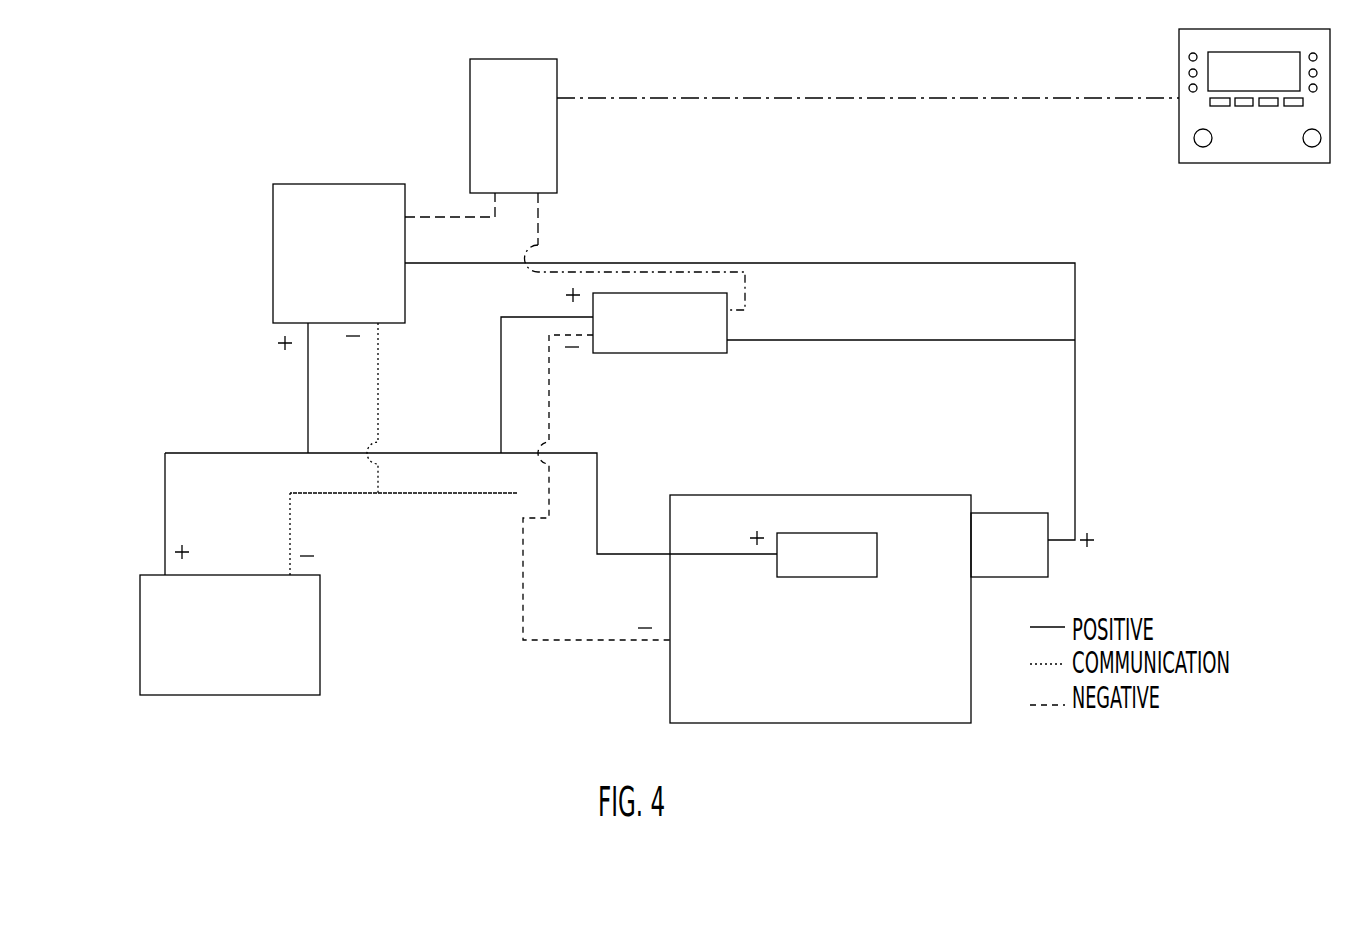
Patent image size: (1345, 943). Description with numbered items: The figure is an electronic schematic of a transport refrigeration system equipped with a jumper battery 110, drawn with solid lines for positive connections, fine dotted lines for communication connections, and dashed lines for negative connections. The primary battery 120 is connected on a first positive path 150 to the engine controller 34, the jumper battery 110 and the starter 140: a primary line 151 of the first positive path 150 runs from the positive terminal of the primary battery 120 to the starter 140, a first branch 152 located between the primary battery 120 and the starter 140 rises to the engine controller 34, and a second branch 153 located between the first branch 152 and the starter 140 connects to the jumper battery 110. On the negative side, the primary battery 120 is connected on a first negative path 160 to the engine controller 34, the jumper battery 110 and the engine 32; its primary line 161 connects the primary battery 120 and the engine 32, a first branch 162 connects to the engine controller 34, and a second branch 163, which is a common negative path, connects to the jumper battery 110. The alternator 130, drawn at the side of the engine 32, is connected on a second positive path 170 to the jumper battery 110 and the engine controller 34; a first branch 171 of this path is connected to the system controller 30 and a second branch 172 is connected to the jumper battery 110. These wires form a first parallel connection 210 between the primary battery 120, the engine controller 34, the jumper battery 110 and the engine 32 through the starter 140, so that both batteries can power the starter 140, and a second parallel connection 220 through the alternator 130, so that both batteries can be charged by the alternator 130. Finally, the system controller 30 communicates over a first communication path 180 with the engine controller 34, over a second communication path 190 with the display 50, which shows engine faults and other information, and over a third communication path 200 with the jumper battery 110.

The system controller 30 is at (526, 134).
The engine 32 is at (835, 654).
The engine controller 34 is at (350, 272).
The display 50 is at (1267, 88).
The jumper battery 110 is at (678, 339).
The primary battery 120 is at (246, 644).
The alternator 130 is at (1018, 558).
The starter 140 is at (840, 572).
The first positive path 150 is at (158, 545).
The primary line of the first positive path 151 is at (165, 453).
The first branch of the first positive path 152 is at (308, 397).
The second branch of the first positive path 153 is at (500, 383).
The first negative path 160 is at (290, 527).
The primary line of the first negative path 161 is at (347, 497).
The first branch of the first negative path 162 is at (379, 396).
The second branch of the first negative path 163 is at (550, 400).
The second positive path 170 is at (1110, 500).
The first branch of the second positive path 171 is at (935, 263).
The second branch of the second positive path 172 is at (865, 341).
The first communication path 180 is at (453, 215).
The second communication path 190 is at (779, 100).
The third communication path 200 is at (542, 223).
The first parallel connection 210 is at (175, 373).
The second parallel connection 220 is at (1115, 421).